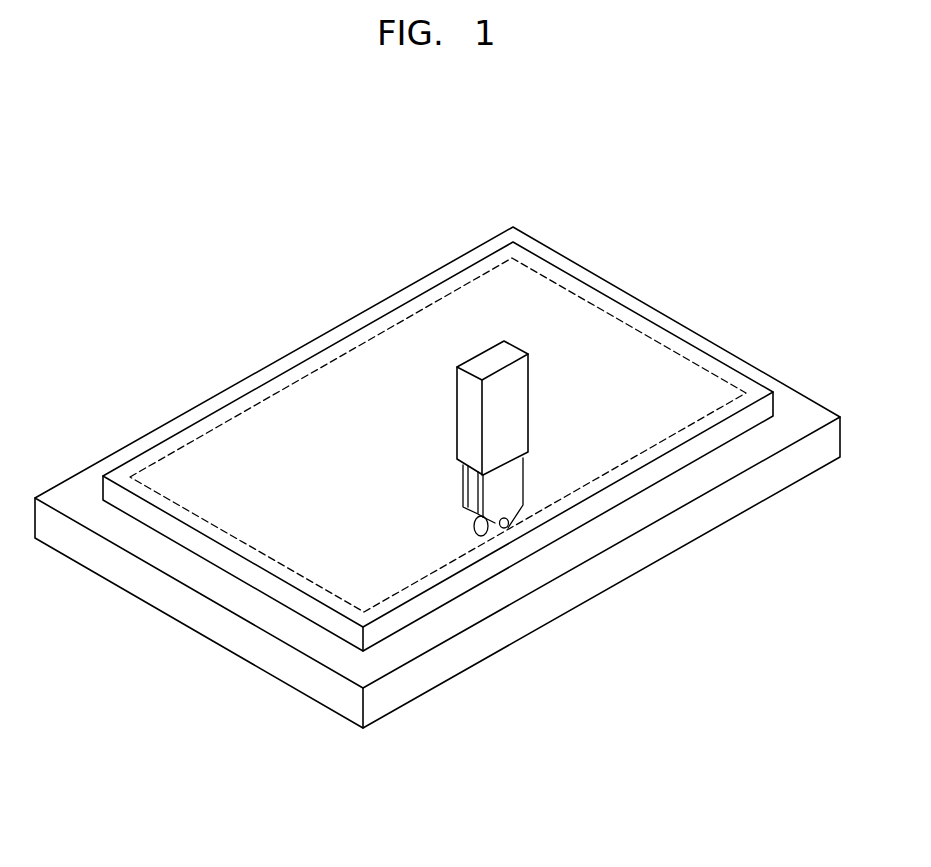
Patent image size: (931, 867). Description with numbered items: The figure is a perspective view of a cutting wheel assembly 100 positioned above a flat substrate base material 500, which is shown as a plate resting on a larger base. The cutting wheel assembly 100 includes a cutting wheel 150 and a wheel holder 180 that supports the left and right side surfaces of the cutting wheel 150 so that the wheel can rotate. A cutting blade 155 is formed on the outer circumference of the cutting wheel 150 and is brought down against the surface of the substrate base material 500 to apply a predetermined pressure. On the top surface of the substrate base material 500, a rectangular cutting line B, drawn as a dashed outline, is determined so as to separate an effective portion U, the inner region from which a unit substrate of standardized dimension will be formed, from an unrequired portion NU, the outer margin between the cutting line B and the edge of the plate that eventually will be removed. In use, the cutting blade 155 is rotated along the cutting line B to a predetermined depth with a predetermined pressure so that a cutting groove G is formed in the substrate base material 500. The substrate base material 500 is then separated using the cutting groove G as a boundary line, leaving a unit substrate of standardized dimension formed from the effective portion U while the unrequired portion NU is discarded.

The substrate base material 500 is at (672, 327).
The cutting line B is at (290, 383).
The effective portion U is at (417, 332).
The unrequired portion NU is at (473, 268).
The cutting wheel assembly 100 is at (425, 524).
The wheel holder 180 is at (459, 443).
The cutting wheel 150 is at (475, 517).
The cutting blade 155 is at (487, 543).
The cutting groove G is at (432, 573).